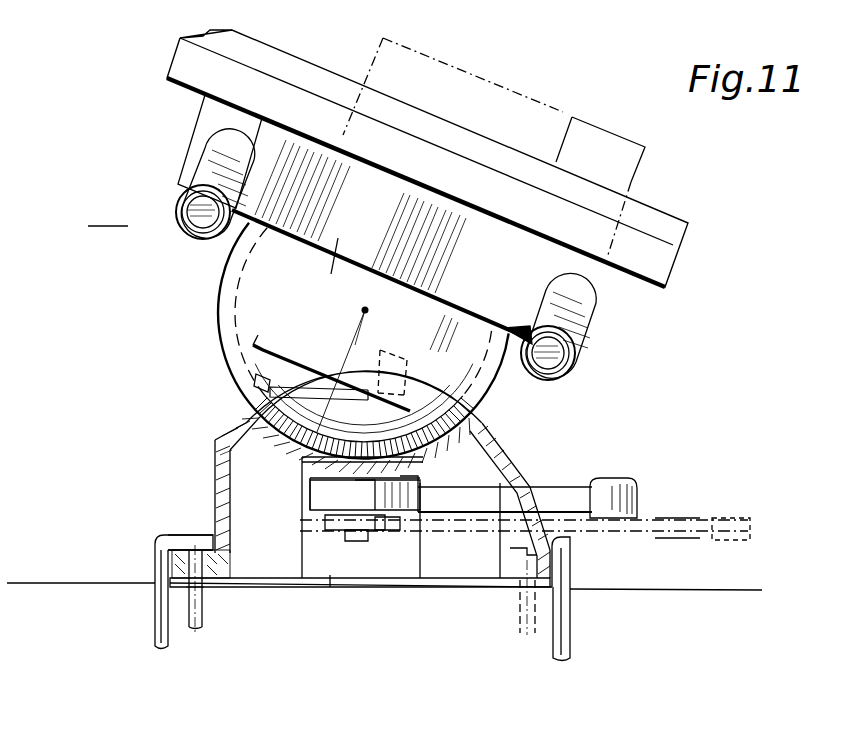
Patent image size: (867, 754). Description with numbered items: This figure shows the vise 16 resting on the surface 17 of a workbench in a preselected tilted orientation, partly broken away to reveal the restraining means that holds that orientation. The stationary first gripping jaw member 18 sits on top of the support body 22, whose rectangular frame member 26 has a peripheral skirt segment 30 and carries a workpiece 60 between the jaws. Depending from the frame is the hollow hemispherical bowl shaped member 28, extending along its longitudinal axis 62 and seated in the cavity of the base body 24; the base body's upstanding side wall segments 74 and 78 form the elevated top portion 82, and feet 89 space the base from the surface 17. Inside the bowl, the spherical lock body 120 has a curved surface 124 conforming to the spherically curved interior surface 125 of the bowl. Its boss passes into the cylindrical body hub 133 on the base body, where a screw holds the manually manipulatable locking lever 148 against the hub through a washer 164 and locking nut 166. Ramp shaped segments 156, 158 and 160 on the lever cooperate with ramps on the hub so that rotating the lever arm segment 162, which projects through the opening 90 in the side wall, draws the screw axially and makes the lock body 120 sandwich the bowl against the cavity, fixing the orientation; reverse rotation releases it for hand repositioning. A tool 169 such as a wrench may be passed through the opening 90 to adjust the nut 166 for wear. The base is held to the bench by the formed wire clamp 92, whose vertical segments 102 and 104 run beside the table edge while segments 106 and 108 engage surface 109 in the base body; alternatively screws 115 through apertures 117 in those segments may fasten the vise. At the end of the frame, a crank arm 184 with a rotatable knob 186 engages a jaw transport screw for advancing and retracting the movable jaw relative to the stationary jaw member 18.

The vise 16 is at (108, 215).
The surface 17 is at (40, 583).
The first workpiece gripping jaw member 18 is at (678, 268).
The support body 22 is at (204, 298).
The base body 24 is at (167, 440).
The frame member 26 is at (203, 118).
The bowl shaped member 28 is at (224, 323).
The peripheral skirt segment 30 is at (333, 262).
The workpiece 60 is at (588, 118).
The longitudinal axis 62 is at (352, 382).
The side wall segment 74 is at (200, 489).
The side wall segment 78 is at (520, 457).
The top portion 82 is at (497, 430).
The feet 89 is at (215, 593).
The opening 90 is at (527, 484).
The clamp 92 is at (584, 664).
The vertical segment 102 is at (152, 616).
The vertical segment 104 is at (566, 636).
The segment 106 is at (193, 535).
The segment 108 is at (558, 532).
The surface 109 is at (213, 557).
The screws 115 is at (204, 628).
The apertures 117 is at (500, 560).
The lock body 120 is at (406, 363).
The spherically curved surface 124 is at (350, 410).
The spherically curved surface 125 is at (243, 386).
The body hub 133 is at (302, 460).
The locking lever 148 is at (318, 498).
The ramp shaped segment 156 is at (310, 482).
The ramp shaped segment 158 is at (365, 482).
The ramp shaped segment 160 is at (420, 486).
The lever arm segment 162 is at (605, 480).
The washer 164 is at (354, 542).
The locking nut 166 is at (384, 533).
The tool 169 is at (724, 514).
The crank arm 184 is at (205, 153).
The rotatable knob 186 is at (190, 234).